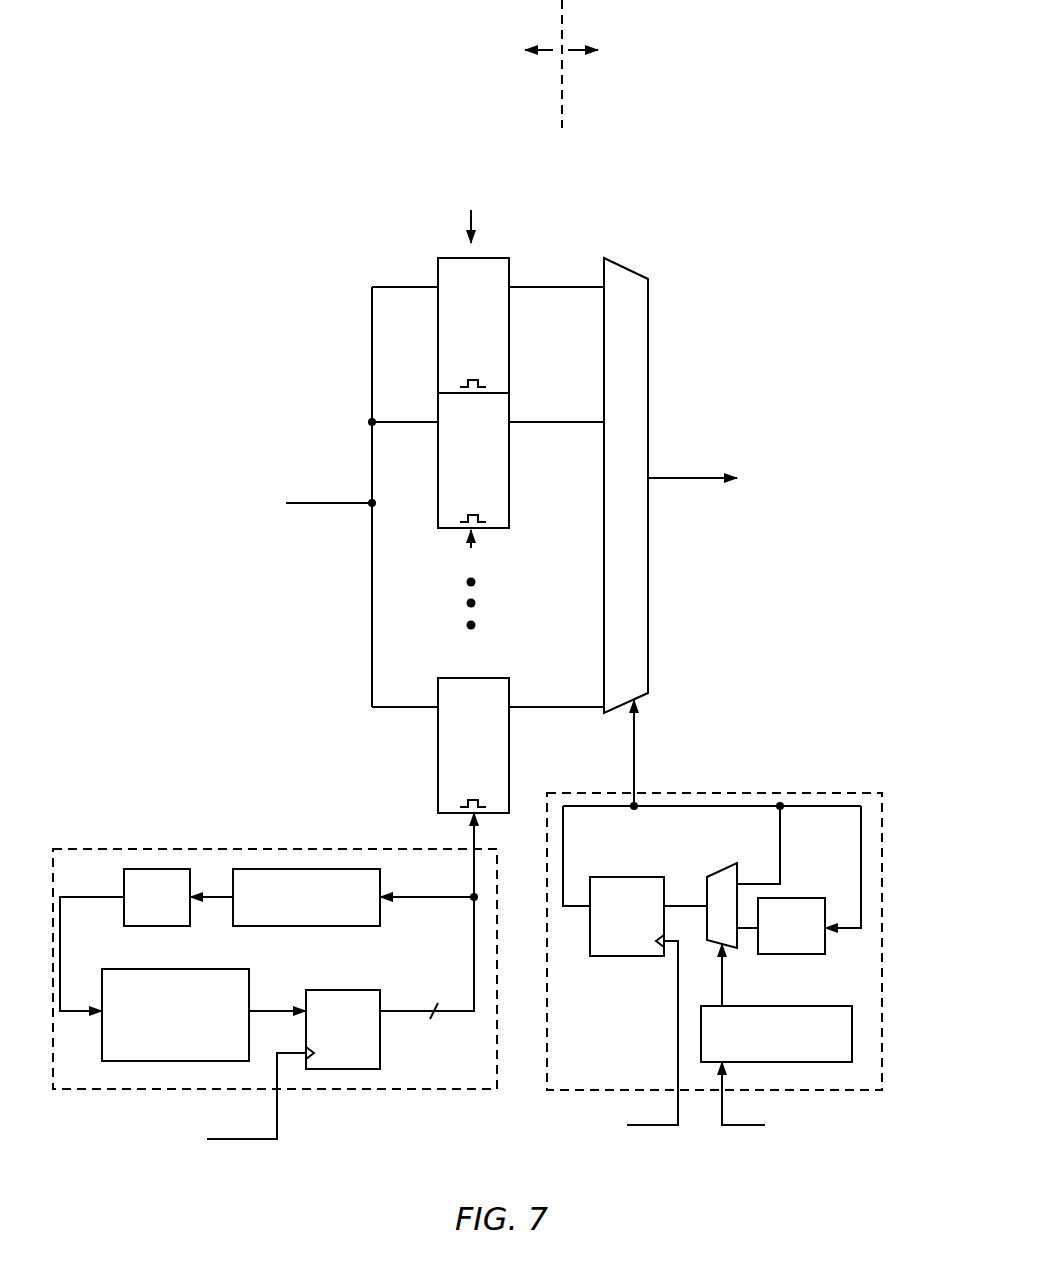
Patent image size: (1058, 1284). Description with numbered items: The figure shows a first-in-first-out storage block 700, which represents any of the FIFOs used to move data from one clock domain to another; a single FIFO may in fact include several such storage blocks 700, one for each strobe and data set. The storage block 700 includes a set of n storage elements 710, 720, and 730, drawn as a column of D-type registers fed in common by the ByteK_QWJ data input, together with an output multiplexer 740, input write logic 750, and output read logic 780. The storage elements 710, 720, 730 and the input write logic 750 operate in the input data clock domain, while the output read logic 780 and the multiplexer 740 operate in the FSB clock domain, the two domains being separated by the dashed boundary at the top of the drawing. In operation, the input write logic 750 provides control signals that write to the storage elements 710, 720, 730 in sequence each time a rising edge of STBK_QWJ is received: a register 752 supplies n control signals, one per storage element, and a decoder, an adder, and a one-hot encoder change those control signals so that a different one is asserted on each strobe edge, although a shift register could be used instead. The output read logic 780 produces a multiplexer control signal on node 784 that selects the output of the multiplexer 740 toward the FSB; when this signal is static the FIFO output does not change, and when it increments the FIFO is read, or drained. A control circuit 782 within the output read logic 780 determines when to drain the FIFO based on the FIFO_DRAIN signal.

The FIFO storage block 700 is at (208, 210).
The storage element 710 is at (509, 358).
The storage element 720 is at (509, 493).
The storage element 730 is at (509, 762).
The output multiplexer 740 is at (648, 580).
The input write logic 750 is at (275, 968).
The register 752 is at (372, 990).
The output read logic 780 is at (714, 933).
The control circuit 782 is at (838, 1006).
The node 784 is at (634, 735).